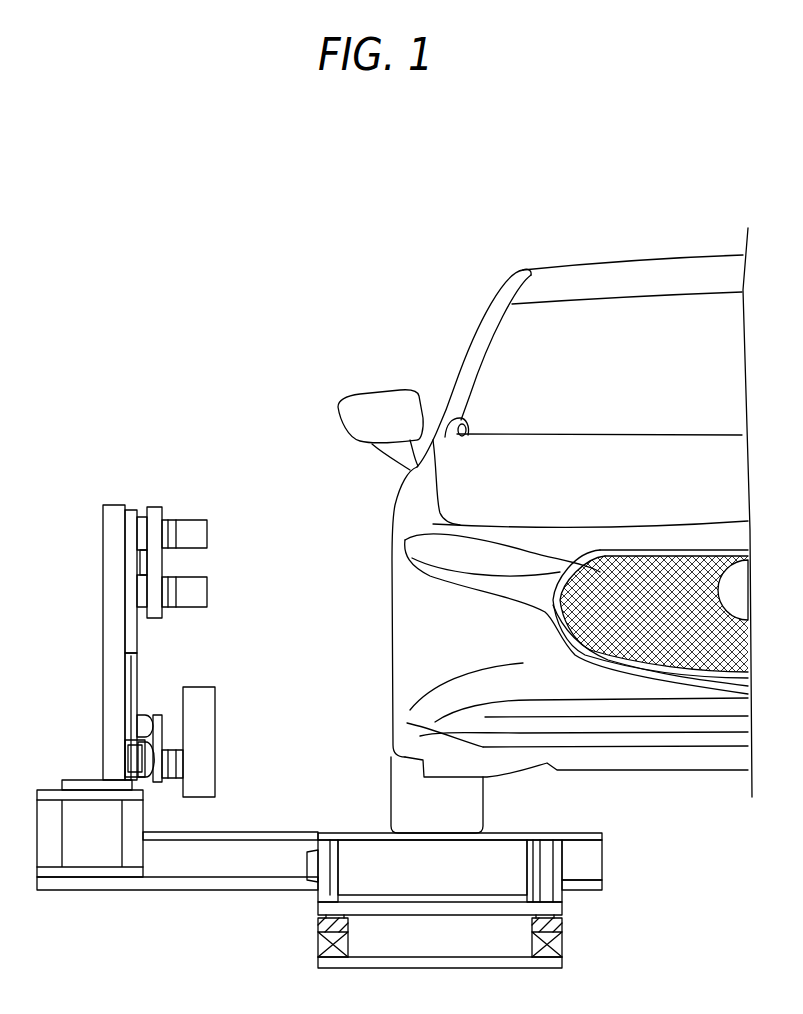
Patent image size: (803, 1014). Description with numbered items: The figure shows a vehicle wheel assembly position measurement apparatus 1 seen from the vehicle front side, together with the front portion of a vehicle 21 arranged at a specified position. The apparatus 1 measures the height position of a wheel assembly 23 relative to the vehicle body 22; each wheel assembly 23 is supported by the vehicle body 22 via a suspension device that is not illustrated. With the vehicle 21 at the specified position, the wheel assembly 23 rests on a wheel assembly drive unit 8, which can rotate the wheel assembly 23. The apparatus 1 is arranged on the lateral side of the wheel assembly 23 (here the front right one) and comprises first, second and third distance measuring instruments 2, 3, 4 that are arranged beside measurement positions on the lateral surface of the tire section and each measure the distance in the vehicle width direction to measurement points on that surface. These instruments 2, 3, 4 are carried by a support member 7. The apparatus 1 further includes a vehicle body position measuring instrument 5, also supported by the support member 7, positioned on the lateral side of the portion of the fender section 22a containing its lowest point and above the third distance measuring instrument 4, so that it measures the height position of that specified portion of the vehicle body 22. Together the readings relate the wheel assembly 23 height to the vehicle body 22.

The vehicle wheel assembly position measurement apparatus 1 is at (169, 488).
The first distance measuring instrument 2 is at (215, 742).
The second distance measuring instrument 3 is at (170, 742).
The third distance measuring instrument 4 is at (210, 592).
The vehicle body position measuring instrument 5 is at (210, 533).
The support member 7 is at (103, 565).
The wheel assembly drive unit 8 is at (513, 836).
The vehicle 21 is at (615, 203).
The vehicle body 22 is at (692, 254).
The fender section 22a is at (393, 502).
The wheel assembly 23 is at (391, 795).